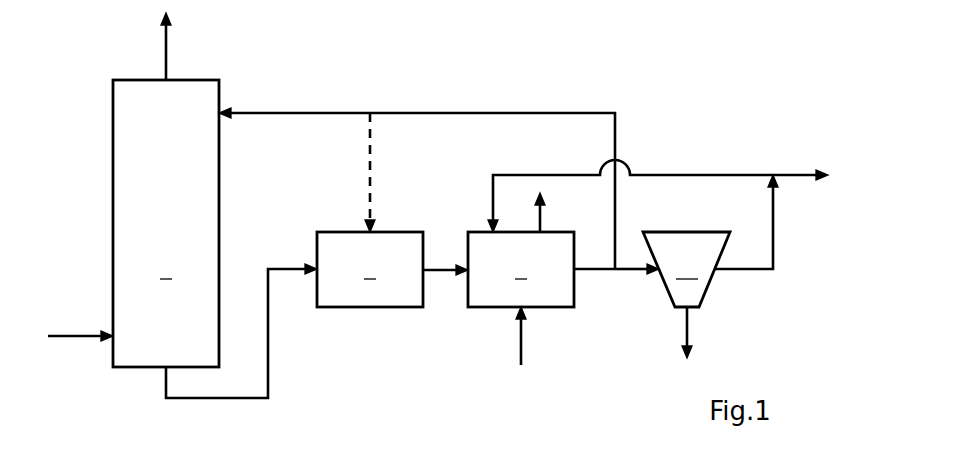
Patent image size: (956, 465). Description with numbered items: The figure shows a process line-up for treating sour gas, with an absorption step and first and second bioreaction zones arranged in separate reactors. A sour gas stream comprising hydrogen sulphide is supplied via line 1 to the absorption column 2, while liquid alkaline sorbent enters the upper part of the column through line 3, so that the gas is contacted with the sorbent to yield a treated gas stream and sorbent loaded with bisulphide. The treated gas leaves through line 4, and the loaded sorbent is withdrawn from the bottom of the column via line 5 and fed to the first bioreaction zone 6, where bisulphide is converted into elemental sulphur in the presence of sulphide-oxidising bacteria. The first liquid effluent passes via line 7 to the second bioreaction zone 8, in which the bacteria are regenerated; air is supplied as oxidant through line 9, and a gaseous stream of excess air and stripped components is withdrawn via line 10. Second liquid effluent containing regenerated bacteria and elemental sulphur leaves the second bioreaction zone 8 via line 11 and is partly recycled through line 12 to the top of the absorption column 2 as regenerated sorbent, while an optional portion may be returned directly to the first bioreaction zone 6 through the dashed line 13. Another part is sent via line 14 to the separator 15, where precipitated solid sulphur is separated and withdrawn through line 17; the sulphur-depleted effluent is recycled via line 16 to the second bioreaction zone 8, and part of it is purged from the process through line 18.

The line 1 is at (78, 334).
The absorption column 2 is at (166, 223).
The line 3 is at (299, 110).
The line 4 is at (167, 36).
The line 5 is at (270, 362).
The first bioreaction zone 6 is at (370, 269).
The line 7 is at (437, 272).
The second bioreaction zone 8 is at (521, 269).
The line 9 is at (523, 338).
The line 10 is at (542, 208).
The line 11 is at (590, 272).
The line 12 is at (491, 110).
The line 13 is at (371, 150).
The line 14 is at (637, 272).
The separator 15 is at (686, 269).
The line 16 is at (703, 170).
The line 17 is at (689, 333).
The line 18 is at (793, 170).